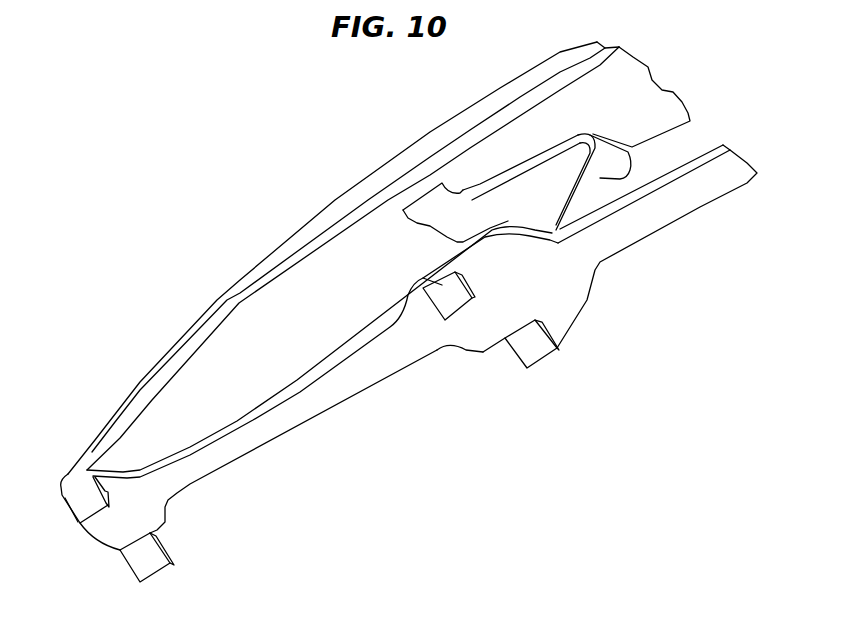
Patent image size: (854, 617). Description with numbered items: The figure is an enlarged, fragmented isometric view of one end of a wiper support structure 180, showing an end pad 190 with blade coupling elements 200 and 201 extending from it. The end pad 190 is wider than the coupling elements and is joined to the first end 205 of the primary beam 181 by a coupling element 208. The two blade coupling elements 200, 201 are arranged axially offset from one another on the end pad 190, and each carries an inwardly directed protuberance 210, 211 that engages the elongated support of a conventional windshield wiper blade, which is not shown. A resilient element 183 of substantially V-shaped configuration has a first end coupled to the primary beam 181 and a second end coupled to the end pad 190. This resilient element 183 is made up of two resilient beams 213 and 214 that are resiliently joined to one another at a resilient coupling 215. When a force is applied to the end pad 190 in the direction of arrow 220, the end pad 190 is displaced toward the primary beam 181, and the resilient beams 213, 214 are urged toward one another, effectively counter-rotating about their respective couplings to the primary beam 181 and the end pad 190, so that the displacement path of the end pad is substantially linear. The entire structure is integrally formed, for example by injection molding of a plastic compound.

The lever assembly 180 is at (382, 475).
The primary beam 181 is at (205, 365).
The resilient element 183 is at (440, 228).
The end pad 190 is at (468, 332).
The blade coupling element 200 is at (423, 278).
The blade coupling element 201 is at (543, 352).
The first end 205 is at (70, 473).
The coupling element 208 is at (218, 458).
The inwardly directed protuberance 210 is at (467, 283).
The inwardly directed protuberance 211 is at (509, 352).
The resilient beam 213 is at (513, 170).
The resilient beam 214 is at (600, 178).
The resilient coupling 215 is at (587, 140).
The arrow 220 is at (520, 393).